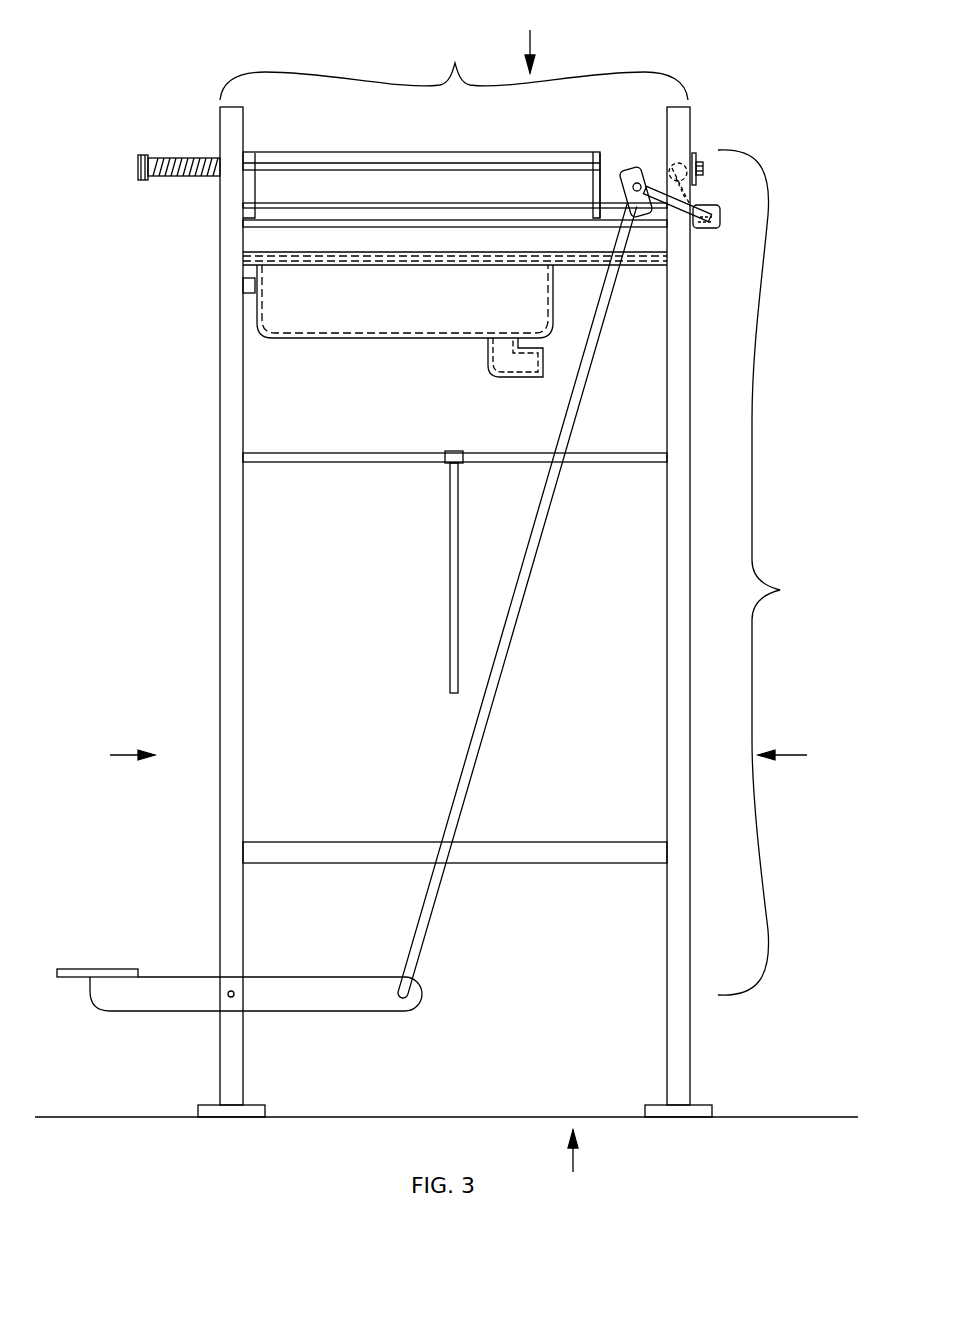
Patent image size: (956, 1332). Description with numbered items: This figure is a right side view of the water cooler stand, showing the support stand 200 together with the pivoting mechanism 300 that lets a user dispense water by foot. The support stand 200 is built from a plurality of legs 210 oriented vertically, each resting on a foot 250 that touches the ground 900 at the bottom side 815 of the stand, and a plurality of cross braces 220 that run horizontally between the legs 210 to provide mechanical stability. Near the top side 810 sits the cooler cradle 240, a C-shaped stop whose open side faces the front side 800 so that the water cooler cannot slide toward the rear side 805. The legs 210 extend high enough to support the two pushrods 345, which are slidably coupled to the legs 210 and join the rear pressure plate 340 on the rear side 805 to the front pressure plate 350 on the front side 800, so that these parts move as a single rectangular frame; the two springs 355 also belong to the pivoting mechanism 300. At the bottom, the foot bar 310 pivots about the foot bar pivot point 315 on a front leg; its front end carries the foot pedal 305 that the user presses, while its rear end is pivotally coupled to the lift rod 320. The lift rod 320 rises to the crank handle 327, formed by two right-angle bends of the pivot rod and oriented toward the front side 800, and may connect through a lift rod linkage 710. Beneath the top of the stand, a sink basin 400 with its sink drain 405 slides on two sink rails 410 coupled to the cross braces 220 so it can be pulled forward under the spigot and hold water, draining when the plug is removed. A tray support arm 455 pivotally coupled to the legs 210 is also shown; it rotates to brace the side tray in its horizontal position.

The support stand 200 is at (454, 70).
The plurality of legs 210 is at (665, 720).
The plurality of cross braces 220 is at (267, 237).
The cooler cradle 240 is at (430, 152).
The foot 250 is at (205, 1105).
The pivoting mechanism 300 is at (772, 572).
The foot pedal 305 is at (82, 968).
The foot bar 310 is at (175, 977).
The foot bar pivot point 315 is at (228, 997).
The lift rod 320 is at (428, 915).
The crank handle 327 is at (677, 215).
The rear pressure plate 340 is at (695, 153).
The two pushrods 345 is at (347, 163).
The front pressure plate 350 is at (148, 158).
The two springs 355 is at (187, 158).
The sink basin 400 is at (337, 338).
The sink drain 405 is at (515, 378).
The two sink rails 410 is at (307, 262).
The tray support arms 455 is at (457, 568).
The lift rod linkage 710 is at (636, 178).
The front side 800 is at (109, 755).
The rear side 805 is at (805, 755).
The top side 810 is at (530, 39).
The bottom side 815 is at (575, 1166).
The ground 900 is at (748, 1117).